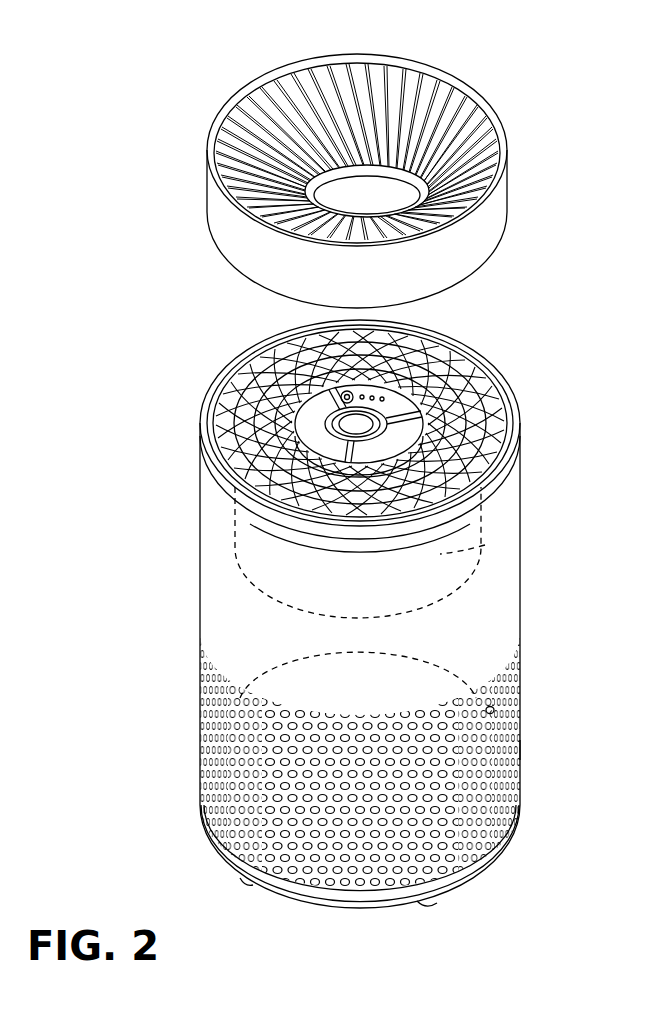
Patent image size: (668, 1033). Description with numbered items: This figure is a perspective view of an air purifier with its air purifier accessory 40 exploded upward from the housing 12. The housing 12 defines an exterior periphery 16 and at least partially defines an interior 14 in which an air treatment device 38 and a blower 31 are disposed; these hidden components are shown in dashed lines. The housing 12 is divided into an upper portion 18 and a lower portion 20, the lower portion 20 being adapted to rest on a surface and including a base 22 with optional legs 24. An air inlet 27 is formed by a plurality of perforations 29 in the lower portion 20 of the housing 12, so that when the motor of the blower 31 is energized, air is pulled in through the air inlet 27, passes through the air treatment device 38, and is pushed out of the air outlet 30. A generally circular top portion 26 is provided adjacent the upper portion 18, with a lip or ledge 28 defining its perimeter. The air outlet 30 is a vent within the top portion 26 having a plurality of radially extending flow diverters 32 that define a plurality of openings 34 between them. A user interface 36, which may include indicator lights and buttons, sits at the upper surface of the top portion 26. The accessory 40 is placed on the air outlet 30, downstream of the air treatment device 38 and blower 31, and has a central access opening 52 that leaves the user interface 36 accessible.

The housing 12 is at (520, 557).
The interior 14 is at (481, 597).
The exterior periphery 16 is at (262, 623).
The upper portion 18 is at (215, 530).
The lower portion 20 is at (200, 722).
The base 22 is at (490, 870).
The legs 24 is at (430, 903).
The top portion 26 is at (517, 443).
The air inlet 27 is at (490, 710).
The ledge 28 is at (212, 453).
The perforations 29 is at (470, 748).
The air outlet 30 is at (212, 398).
The blower 31 is at (485, 545).
The flow diverters 32 is at (483, 468).
The openings 34 is at (450, 343).
The user interface 36 is at (250, 354).
The air treatment device 38 is at (500, 636).
The air purifier accessory 40 is at (225, 118).
The access opening 52 is at (378, 148).